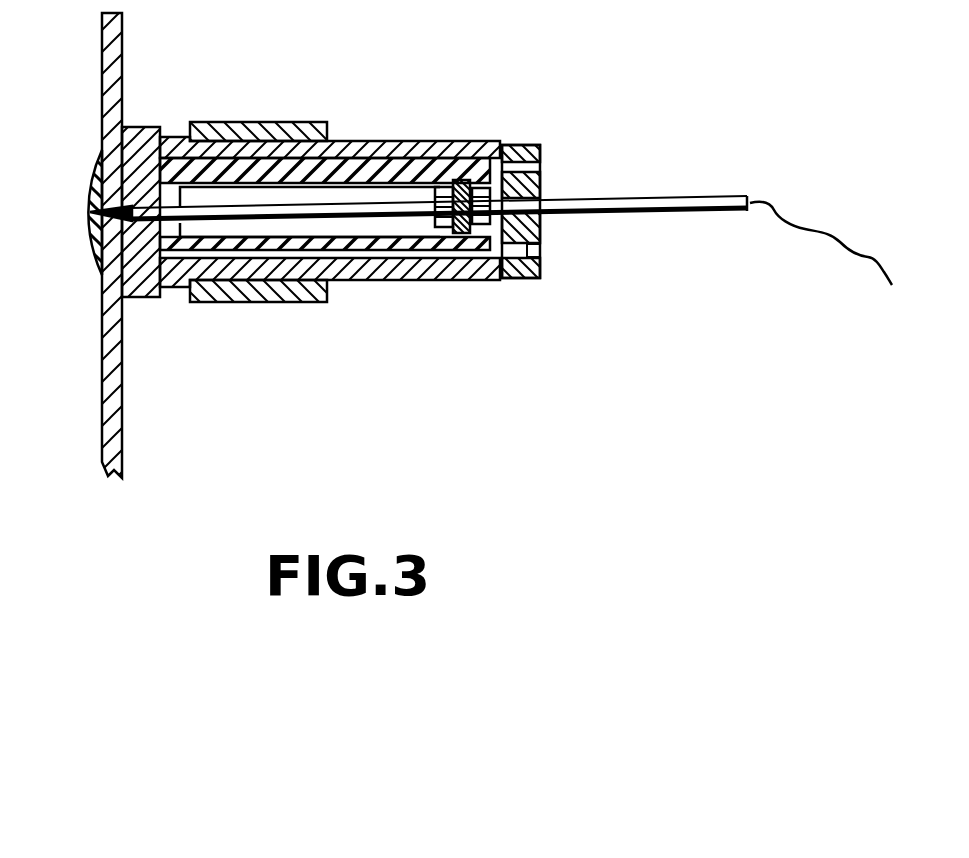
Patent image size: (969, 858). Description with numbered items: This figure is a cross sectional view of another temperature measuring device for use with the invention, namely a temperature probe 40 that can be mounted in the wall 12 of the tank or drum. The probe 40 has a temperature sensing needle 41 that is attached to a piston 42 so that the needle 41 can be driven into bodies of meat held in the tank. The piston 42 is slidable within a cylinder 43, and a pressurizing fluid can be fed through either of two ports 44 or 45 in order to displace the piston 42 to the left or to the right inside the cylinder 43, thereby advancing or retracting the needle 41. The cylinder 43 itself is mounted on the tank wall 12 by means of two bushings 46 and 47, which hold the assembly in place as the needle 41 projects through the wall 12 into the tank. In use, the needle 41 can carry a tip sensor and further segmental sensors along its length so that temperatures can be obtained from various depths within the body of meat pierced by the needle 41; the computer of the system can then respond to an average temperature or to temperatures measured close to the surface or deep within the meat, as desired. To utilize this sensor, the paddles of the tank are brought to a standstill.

The wall 12 is at (110, 397).
The temperature probe 40 is at (244, 306).
The temperature sensing needle 41 is at (340, 205).
The piston 42 is at (456, 238).
The cylinder 43 is at (378, 248).
The port 44 is at (518, 143).
The port 45 is at (543, 255).
The bushing 46 is at (162, 132).
The bushing 47 is at (300, 121).